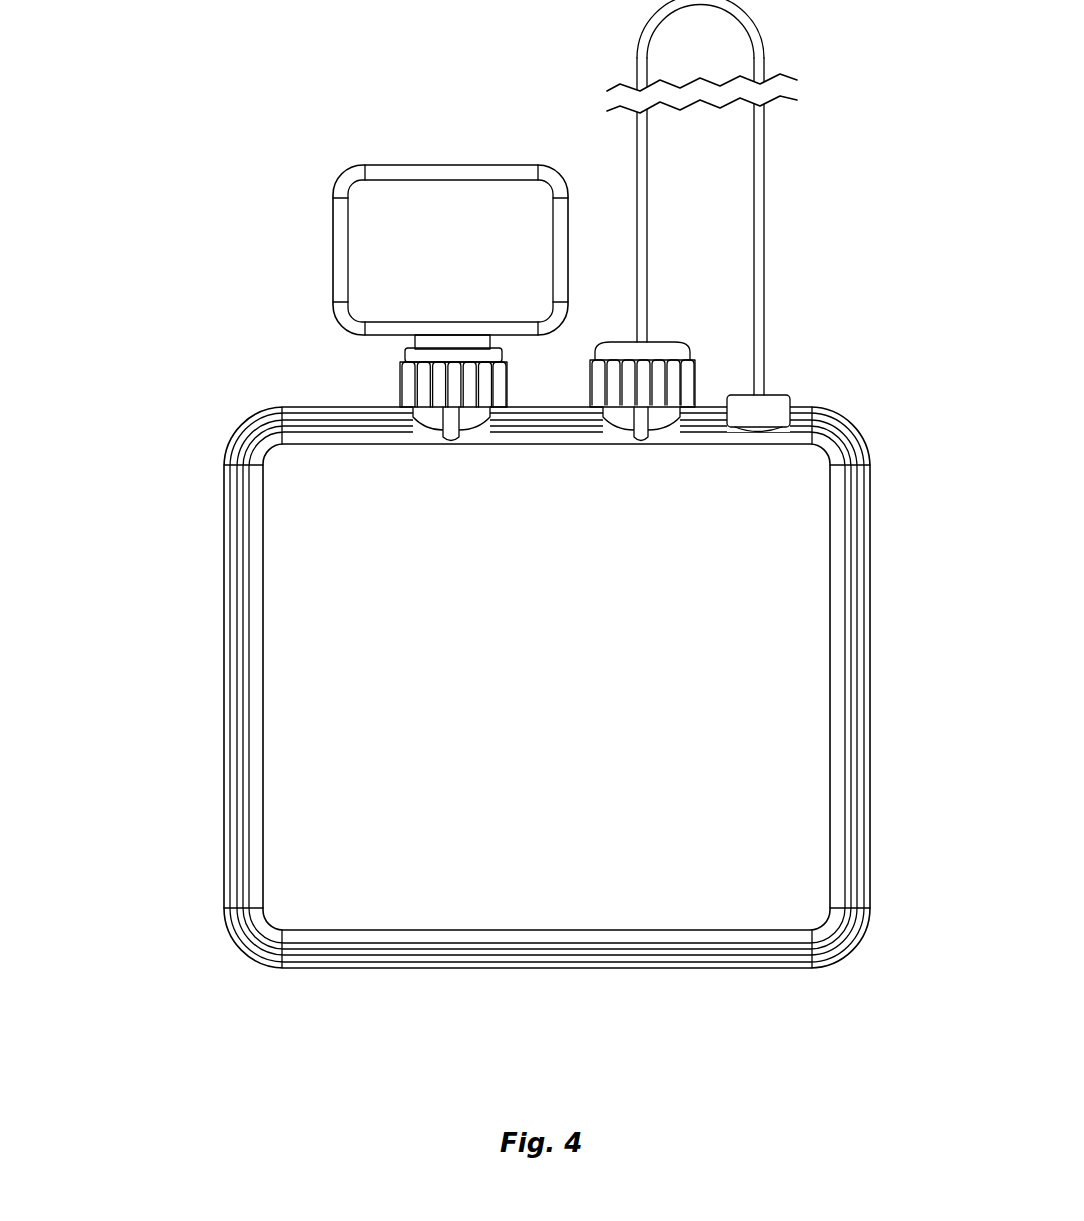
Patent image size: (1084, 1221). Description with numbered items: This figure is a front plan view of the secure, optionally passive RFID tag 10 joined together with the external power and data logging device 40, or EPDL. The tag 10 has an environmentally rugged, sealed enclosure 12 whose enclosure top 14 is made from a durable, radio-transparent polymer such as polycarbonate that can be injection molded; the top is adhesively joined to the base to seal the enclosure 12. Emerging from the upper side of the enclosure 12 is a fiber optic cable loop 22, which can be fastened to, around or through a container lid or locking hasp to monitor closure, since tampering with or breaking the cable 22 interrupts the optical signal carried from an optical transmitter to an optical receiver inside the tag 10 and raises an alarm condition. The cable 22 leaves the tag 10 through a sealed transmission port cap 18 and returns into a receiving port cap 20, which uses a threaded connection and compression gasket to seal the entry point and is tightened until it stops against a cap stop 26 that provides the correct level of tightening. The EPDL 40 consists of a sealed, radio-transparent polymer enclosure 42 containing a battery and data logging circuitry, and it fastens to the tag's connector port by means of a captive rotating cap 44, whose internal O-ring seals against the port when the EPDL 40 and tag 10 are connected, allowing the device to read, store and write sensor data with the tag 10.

The tag 10 is at (492, 549).
The enclosure 12 is at (481, 715).
The enclosure top 14 is at (338, 775).
The transmission port cap 18 is at (777, 393).
The receiving port cap 20 is at (741, 203).
The fiber optic cable loop 22 is at (763, 323).
The cap stop 26 is at (635, 410).
The external power and data logging device 40 is at (372, 208).
The enclosure 42 is at (365, 207).
The captive rotating cap 44 is at (412, 382).